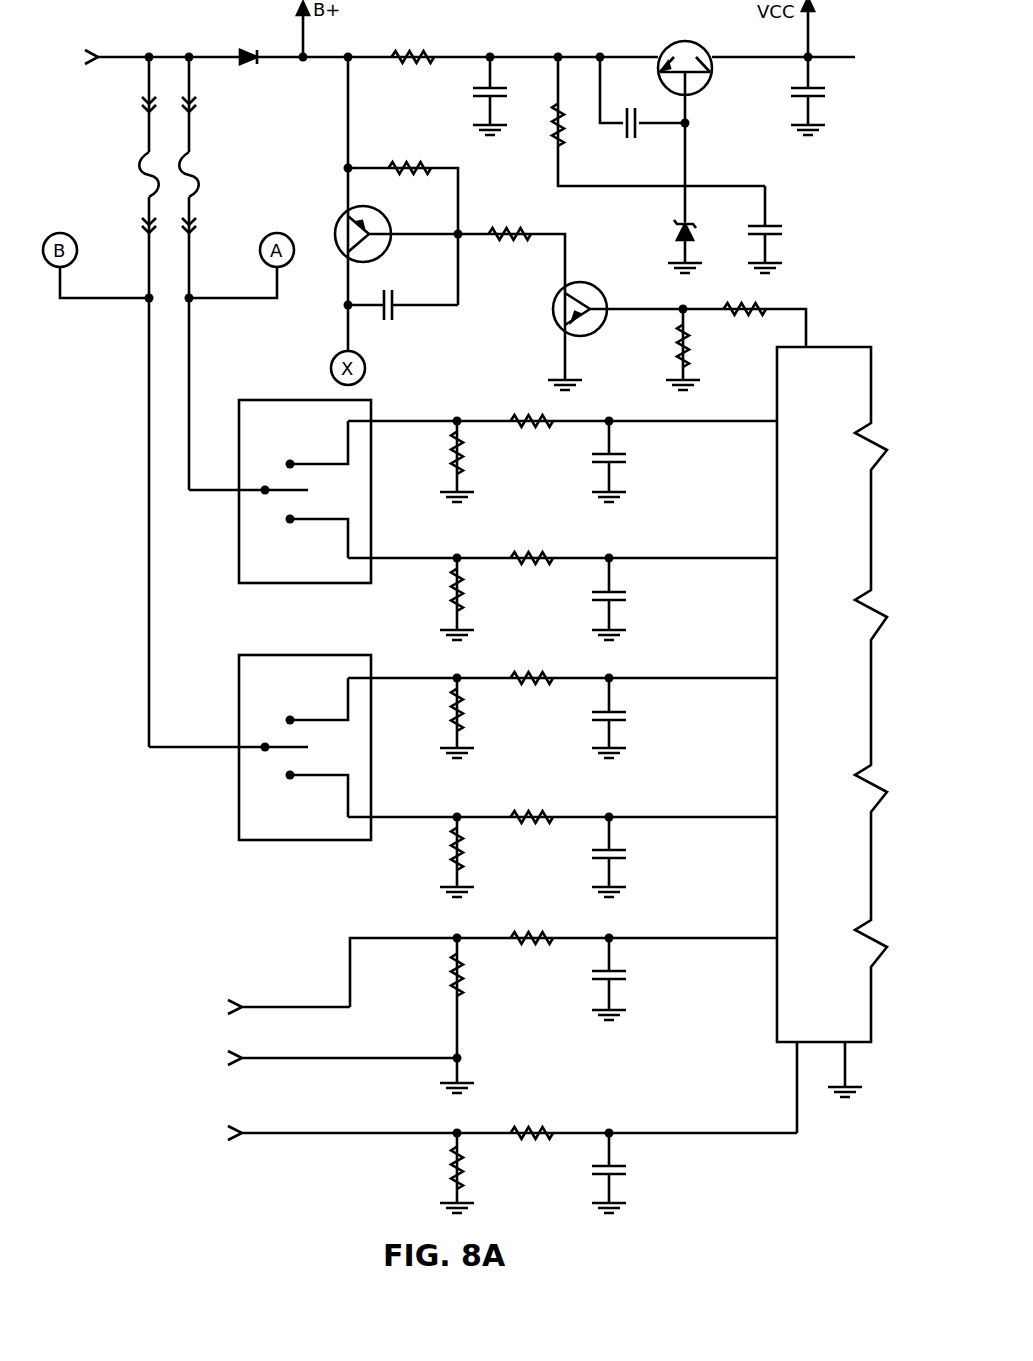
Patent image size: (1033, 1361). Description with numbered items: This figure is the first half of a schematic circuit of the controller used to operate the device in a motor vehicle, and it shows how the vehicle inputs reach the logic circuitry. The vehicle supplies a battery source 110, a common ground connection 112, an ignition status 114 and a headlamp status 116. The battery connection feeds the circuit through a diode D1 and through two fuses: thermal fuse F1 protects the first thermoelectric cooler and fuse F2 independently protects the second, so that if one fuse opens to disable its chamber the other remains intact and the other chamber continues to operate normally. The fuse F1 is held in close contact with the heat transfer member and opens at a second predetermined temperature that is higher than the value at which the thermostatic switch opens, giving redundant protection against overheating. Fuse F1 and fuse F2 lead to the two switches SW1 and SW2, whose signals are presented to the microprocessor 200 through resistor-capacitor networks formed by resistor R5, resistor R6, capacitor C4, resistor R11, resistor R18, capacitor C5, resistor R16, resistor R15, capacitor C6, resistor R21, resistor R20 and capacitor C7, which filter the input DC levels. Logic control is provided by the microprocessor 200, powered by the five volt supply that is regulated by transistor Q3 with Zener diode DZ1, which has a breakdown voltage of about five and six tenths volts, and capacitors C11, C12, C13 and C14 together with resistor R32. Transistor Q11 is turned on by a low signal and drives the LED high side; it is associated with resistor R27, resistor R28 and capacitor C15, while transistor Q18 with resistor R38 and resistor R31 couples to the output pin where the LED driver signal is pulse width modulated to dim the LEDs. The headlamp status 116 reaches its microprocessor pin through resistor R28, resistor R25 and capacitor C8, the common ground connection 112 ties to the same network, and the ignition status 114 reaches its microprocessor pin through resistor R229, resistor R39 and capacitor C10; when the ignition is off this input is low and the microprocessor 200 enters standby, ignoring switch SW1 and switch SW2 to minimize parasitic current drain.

The battery source 110 is at (61, 78).
The common ground connection 112 is at (175, 1058).
The ignition status 114 is at (180, 1134).
The headlamp status 116 is at (153, 1006).
The microprocessor 200 is at (840, 498).
The diode D1 is at (250, 42).
The thermal fuse F1 is at (207, 273).
The fuse F2 is at (133, 402).
The switch SW1 is at (280, 479).
The switch SW2 is at (260, 735).
The transistor Q3 is at (685, 120).
The transistor Q11 is at (380, 229).
The transistor Q18 is at (597, 336).
The Zener diode DZ1 is at (669, 246).
The resistor R5 is at (532, 434).
The resistor R6 is at (444, 461).
The resistor R11 is at (532, 546).
The resistor R15 is at (442, 718).
The resistor R16 is at (532, 666).
The resistor R18 is at (442, 599).
The resistor R20 is at (442, 857).
The resistor R21 is at (532, 804).
The resistor R25 is at (442, 1015).
The resistor R27 is at (403, 221).
The resistor R28 is at (511, 239).
The resistor R31 is at (744, 325).
The resistor R32 is at (413, 45).
The resistor R38 is at (670, 349).
The resistor R39 is at (442, 1173).
The resistor R229 is at (535, 1121).
The capacitor C4 is at (629, 461).
The capacitor C5 is at (629, 599).
The capacitor C6 is at (629, 718).
The capacitor C7 is at (629, 857).
The capacitor C8 is at (629, 979).
The capacitor C10 is at (634, 1173).
The capacitor C11 is at (642, 112).
The capacitor C12 is at (786, 229).
The capacitor C13 is at (786, 96).
The capacitor C14 is at (468, 96).
The capacitor C15 is at (403, 293).